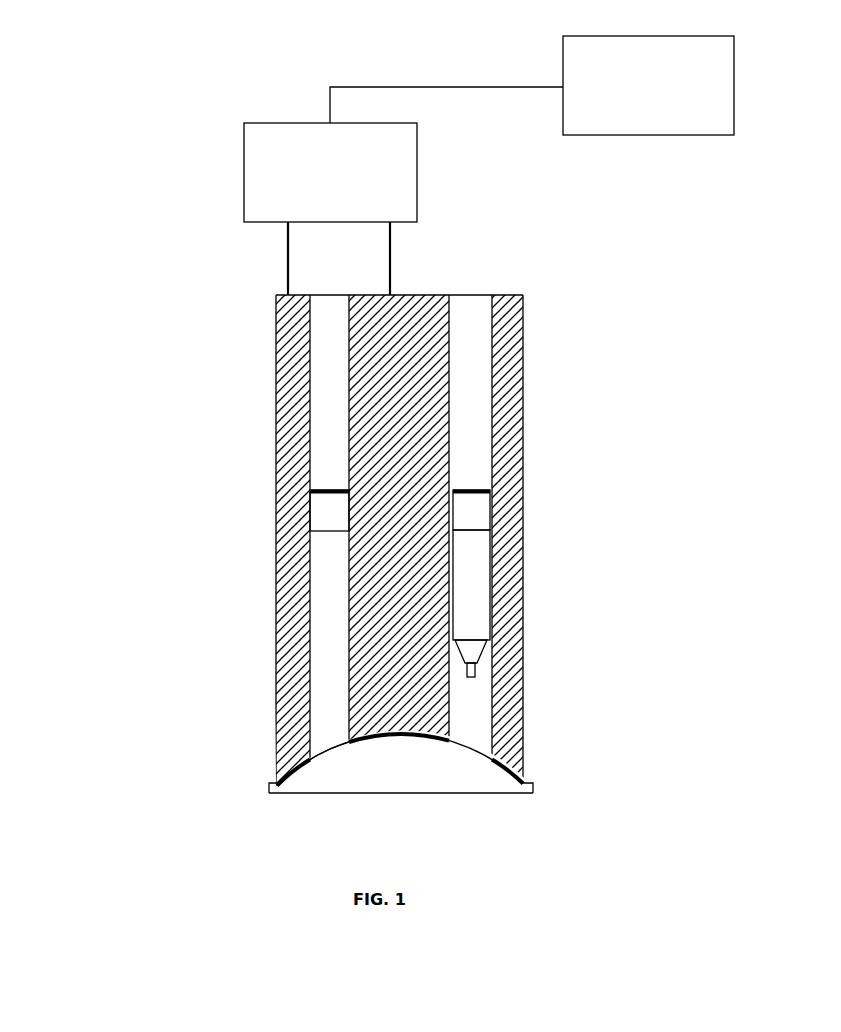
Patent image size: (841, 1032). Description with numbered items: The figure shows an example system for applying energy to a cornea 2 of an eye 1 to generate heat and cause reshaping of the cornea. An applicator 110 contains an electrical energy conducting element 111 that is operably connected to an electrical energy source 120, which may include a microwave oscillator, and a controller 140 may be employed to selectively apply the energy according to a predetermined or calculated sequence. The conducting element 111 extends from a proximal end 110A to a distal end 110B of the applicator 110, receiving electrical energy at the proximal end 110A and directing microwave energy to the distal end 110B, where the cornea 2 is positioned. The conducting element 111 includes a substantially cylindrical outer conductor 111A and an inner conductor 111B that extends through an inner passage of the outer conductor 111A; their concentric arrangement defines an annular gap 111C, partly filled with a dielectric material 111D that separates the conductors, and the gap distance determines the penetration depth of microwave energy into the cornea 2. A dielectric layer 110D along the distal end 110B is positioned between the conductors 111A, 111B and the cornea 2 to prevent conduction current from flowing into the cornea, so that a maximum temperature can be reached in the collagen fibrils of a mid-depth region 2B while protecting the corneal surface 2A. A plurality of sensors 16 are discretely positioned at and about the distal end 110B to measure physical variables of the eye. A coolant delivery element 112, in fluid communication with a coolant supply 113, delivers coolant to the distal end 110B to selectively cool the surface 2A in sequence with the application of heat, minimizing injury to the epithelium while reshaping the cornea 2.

The eye 1 is at (362, 780).
The cornea 2 is at (375, 750).
The corneal surface 2A is at (402, 735).
The mid-depth region 2B is at (397, 753).
The sensors 16 is at (270, 780).
The applicator 110 is at (275, 632).
The proximal end 110A is at (258, 250).
The distal end 110B is at (257, 776).
The dielectric layer 110D is at (350, 737).
The electrical energy conducting element 111 is at (155, 285).
The outer conductor 111A is at (290, 362).
The inner conductor 111B is at (403, 358).
The annular gap 111C is at (325, 552).
The dielectric material 111D is at (330, 440).
The coolant delivery element 112 is at (473, 615).
The coolant supply 113 is at (473, 513).
The electrical energy source 120 is at (255, 168).
The controller 140 is at (725, 93).